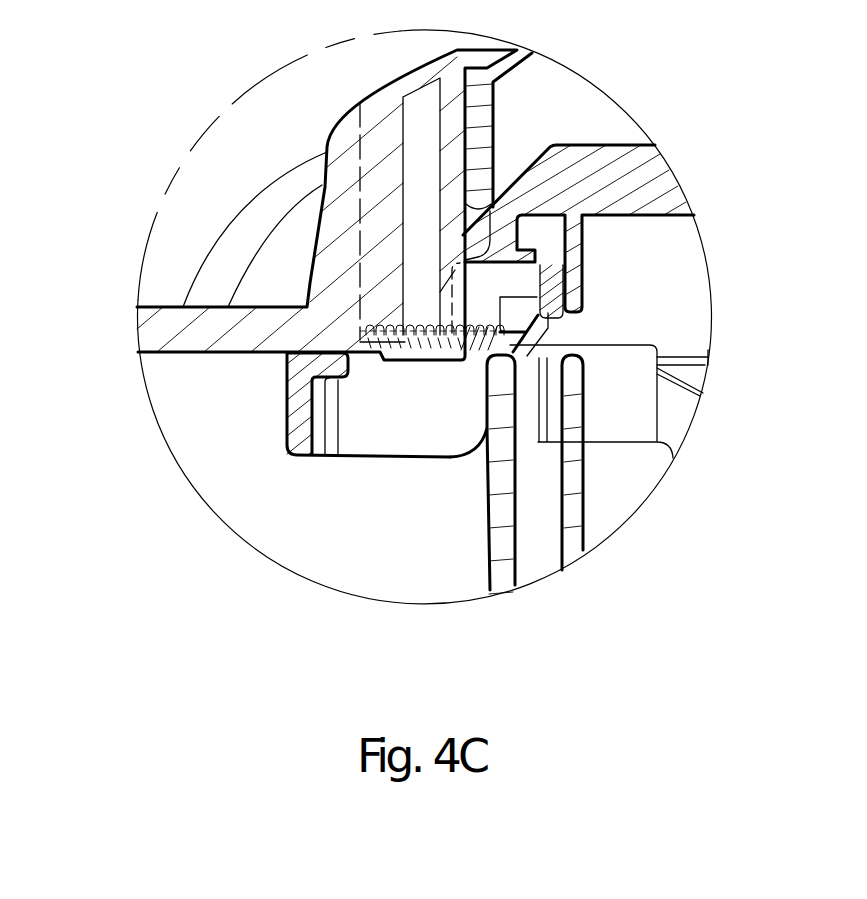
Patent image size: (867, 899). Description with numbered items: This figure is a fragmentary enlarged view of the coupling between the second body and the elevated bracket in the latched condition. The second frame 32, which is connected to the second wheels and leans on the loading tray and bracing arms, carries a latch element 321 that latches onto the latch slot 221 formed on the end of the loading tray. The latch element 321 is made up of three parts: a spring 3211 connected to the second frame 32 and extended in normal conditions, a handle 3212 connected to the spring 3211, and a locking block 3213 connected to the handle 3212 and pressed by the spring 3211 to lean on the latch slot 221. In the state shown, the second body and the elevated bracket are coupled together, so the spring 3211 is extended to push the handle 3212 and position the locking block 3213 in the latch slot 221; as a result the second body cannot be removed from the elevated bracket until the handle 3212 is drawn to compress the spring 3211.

The second frame 32 is at (348, 193).
The latch slot 221 is at (545, 238).
The latch element 321 is at (108, 538).
The spring 3211 is at (398, 357).
The handle 3212 is at (293, 453).
The locking block 3213 is at (548, 312).